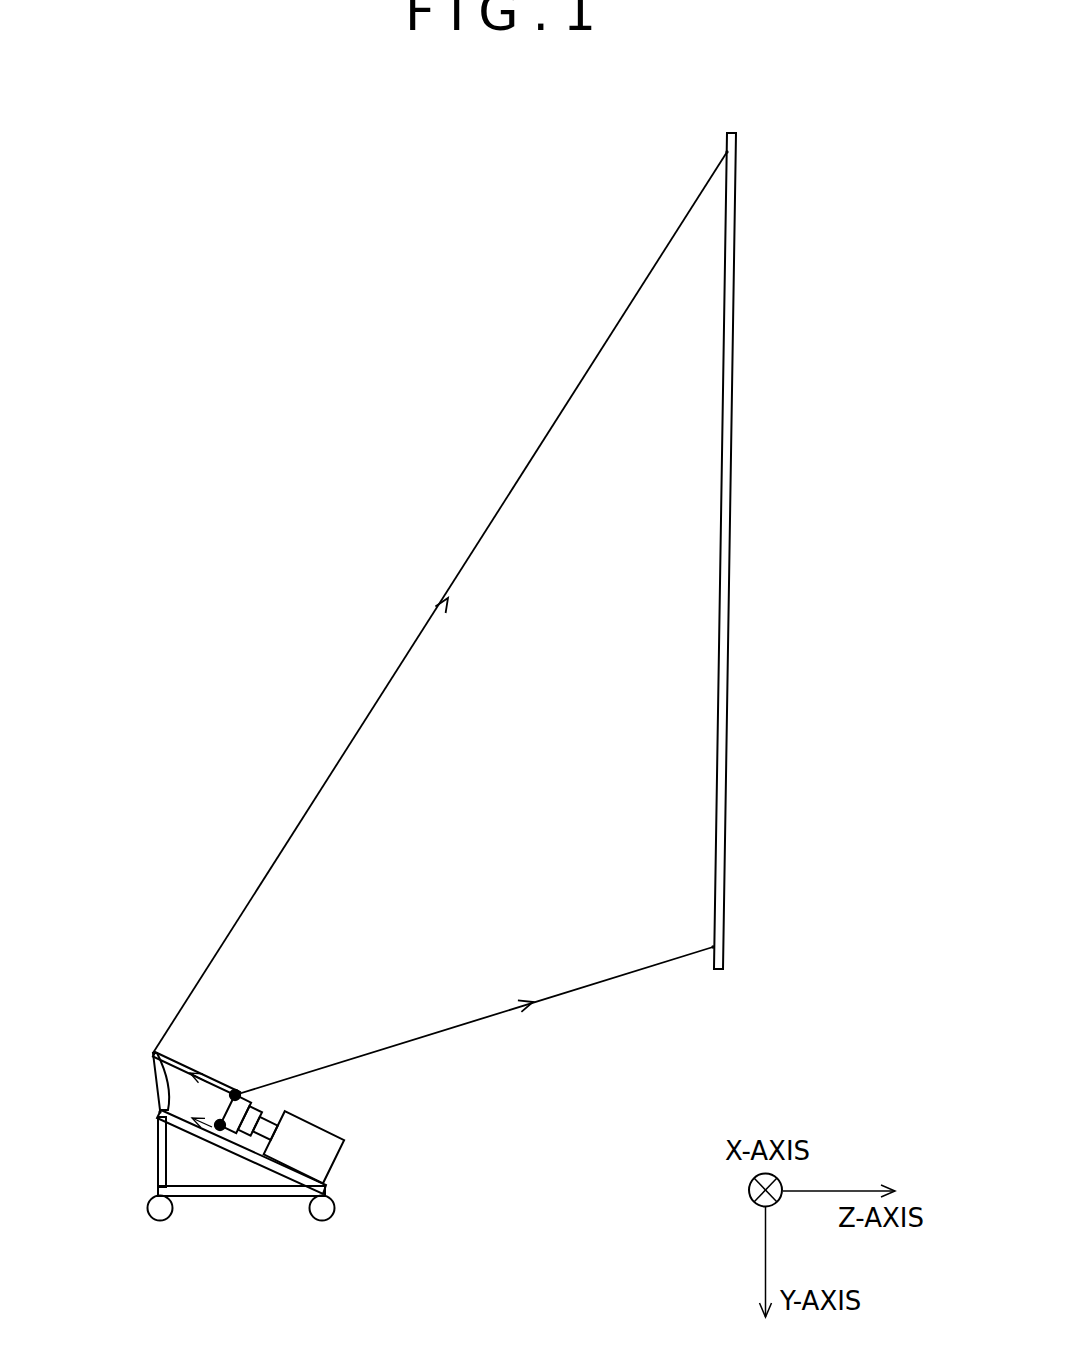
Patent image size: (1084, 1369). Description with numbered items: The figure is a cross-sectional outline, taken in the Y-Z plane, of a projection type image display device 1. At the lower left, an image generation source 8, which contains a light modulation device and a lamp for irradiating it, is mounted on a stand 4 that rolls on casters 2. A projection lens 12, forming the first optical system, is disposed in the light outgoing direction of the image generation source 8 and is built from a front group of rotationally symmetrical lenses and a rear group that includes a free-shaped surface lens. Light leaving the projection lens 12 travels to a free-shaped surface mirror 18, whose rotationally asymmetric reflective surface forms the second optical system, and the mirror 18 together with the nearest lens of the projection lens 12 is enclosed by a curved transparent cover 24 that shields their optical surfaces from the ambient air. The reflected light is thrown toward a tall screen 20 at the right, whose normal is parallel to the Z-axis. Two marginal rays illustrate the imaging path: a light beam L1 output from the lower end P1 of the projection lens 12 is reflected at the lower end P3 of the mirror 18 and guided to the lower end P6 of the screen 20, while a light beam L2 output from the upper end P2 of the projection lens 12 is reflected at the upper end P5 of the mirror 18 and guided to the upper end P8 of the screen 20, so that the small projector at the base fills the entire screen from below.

The projection type image display device 1 is at (258, 475).
The casters 2 is at (162, 1223).
The stand 4 is at (157, 1167).
The image generation source 8 is at (340, 1136).
The projection lens 12 is at (247, 1095).
The free-shaped surface mirror 18 is at (163, 1092).
The screen 20 is at (730, 133).
The transparent cover 24 is at (192, 1063).
The lower end of the projection lens P1 is at (223, 1133).
The upper end of the projection lens P2 is at (237, 1090).
The lower end of the free-shaped surface mirror P3 is at (158, 1117).
The upper end of the free-shaped surface mirror P5 is at (155, 1053).
The lower end of the screen P6 is at (713, 950).
The upper end of the screen P8 is at (727, 152).
The light beam L1 is at (592, 985).
The light beam L2 is at (363, 728).